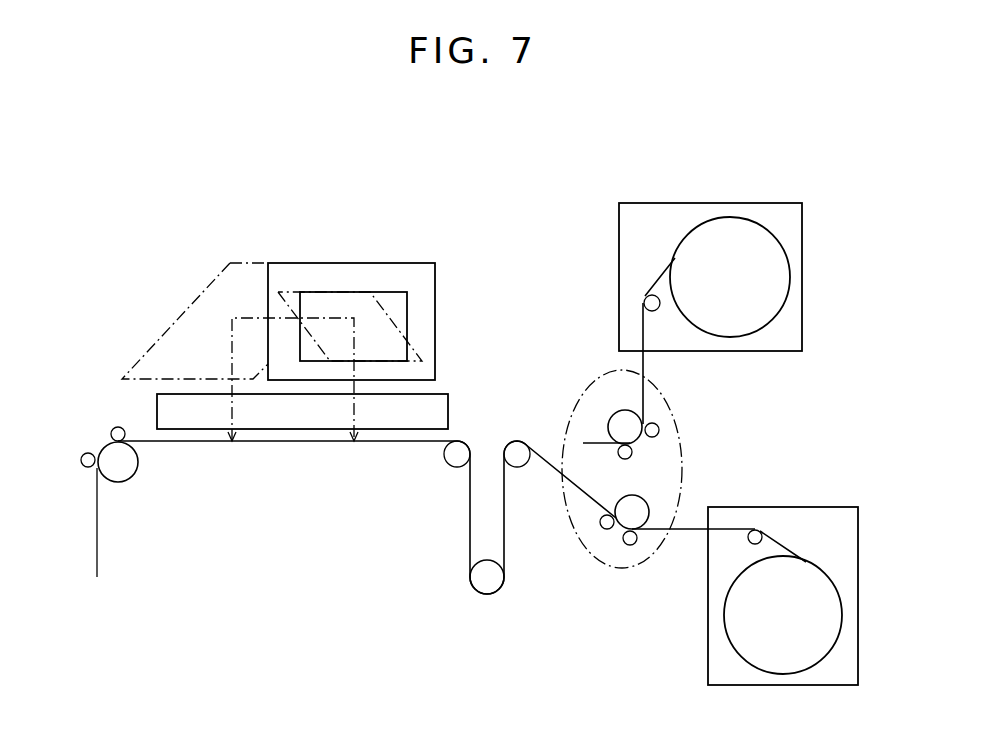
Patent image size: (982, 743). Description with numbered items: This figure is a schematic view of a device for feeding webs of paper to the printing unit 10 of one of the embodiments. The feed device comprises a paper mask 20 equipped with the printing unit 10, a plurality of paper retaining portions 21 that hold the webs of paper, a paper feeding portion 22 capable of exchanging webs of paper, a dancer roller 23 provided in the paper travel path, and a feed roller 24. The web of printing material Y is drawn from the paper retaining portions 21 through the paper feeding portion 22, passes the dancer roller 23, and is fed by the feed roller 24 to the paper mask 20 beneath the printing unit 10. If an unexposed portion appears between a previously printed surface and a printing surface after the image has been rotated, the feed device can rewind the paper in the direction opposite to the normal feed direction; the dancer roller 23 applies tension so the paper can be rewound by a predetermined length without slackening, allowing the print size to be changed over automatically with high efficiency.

The printing device 10 is at (212, 267).
The paper mask 20 is at (163, 420).
The paper retaining portions 21 is at (810, 505).
The paper feeding portion 22 is at (607, 568).
The dancer roller 23 is at (485, 580).
The feed roller 24 is at (125, 467).
The web of printing material Y is at (97, 513).